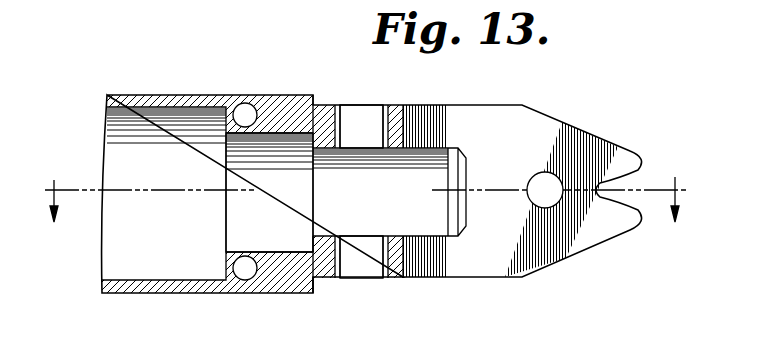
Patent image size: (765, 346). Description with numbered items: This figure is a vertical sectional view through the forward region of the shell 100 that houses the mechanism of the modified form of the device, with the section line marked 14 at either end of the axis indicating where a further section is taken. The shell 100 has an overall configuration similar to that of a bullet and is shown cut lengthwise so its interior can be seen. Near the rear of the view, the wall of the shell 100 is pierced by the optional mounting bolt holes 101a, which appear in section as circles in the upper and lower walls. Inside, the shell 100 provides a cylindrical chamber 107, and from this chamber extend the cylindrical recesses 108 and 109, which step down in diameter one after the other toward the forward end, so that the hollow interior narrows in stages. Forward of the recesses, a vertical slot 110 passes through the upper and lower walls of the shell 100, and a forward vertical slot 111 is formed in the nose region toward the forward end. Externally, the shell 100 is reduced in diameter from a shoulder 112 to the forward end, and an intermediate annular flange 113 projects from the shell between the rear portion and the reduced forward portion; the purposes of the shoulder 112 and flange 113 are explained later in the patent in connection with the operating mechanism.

The shell 100 is at (157, 98).
The mounting bolt holes 101a is at (247, 112).
The cylindrical chamber 107 is at (128, 283).
The cylindrical recess 108 is at (281, 150).
The cylindrical recess 109 is at (416, 163).
The vertical slot 110 is at (356, 118).
The forward vertical slot 111 is at (546, 140).
The shoulder 112 is at (316, 282).
The intermediate annular flange 113 is at (318, 243).
The section line 14- 14 is at (376, 207).